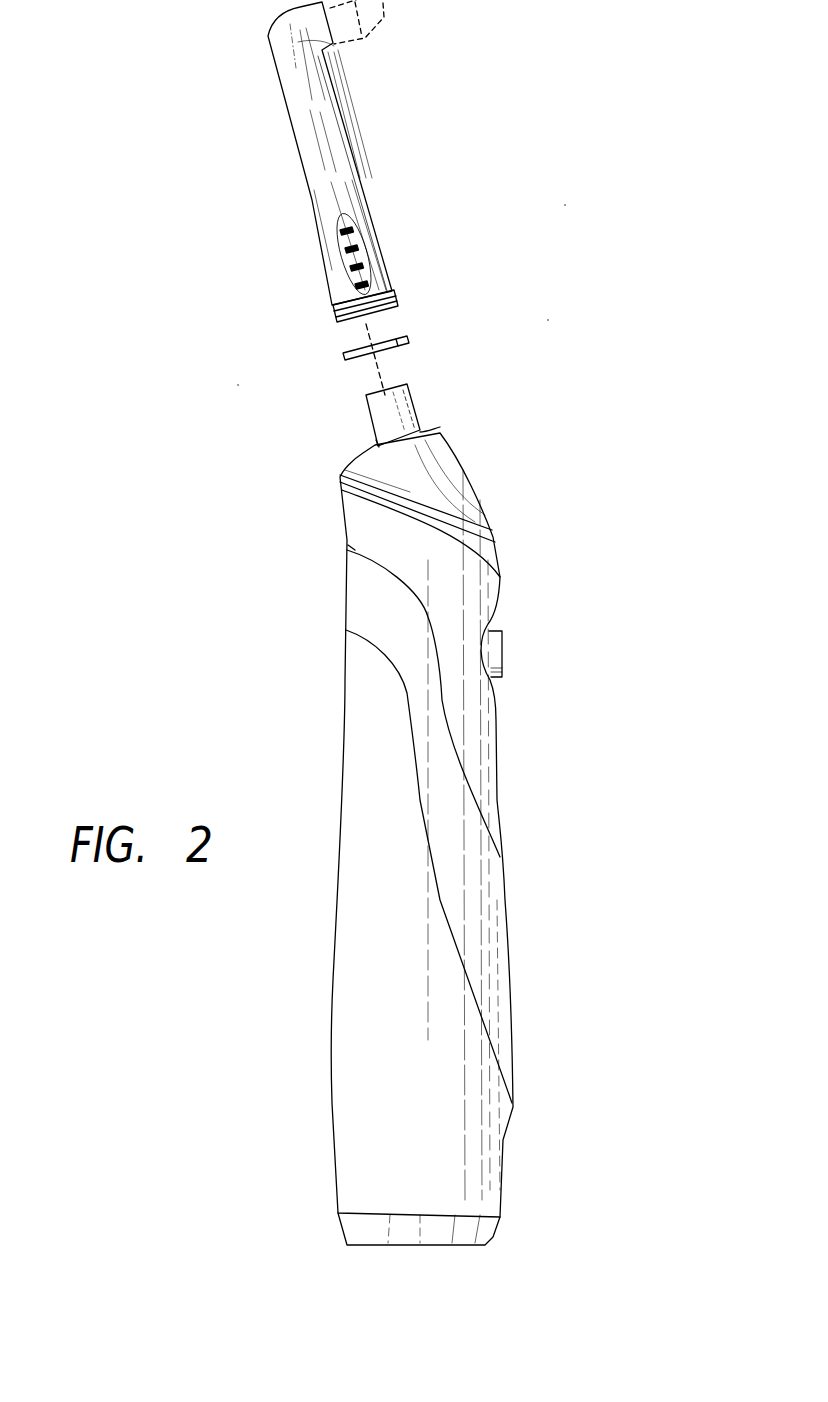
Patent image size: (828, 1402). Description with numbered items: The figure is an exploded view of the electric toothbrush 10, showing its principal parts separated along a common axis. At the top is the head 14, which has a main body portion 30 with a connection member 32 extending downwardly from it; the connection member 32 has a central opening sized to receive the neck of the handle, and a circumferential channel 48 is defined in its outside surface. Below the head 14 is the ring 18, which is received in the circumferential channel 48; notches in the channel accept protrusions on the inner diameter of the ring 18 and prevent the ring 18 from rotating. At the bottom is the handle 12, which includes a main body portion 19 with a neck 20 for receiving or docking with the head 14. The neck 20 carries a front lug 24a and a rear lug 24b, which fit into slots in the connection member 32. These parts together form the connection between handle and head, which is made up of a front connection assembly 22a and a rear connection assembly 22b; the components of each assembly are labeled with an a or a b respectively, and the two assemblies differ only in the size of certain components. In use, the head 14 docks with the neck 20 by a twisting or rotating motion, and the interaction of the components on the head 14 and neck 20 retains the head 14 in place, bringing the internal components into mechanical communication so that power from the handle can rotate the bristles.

The electric toothbrush 10 is at (565, 205).
The handle 12 is at (482, 747).
The head 14 is at (325, 96).
The ring 18 is at (410, 343).
The main body portion 19 is at (348, 545).
The neck 20 is at (413, 398).
The front connection assembly 22a is at (548, 320).
The rear connection assembly 22b is at (238, 385).
The front lug 24a is at (440, 427).
The rear lug 24b is at (376, 440).
The main body portion 30 is at (312, 183).
The connection member 32 is at (337, 318).
The circumferential channel 48 is at (394, 296).